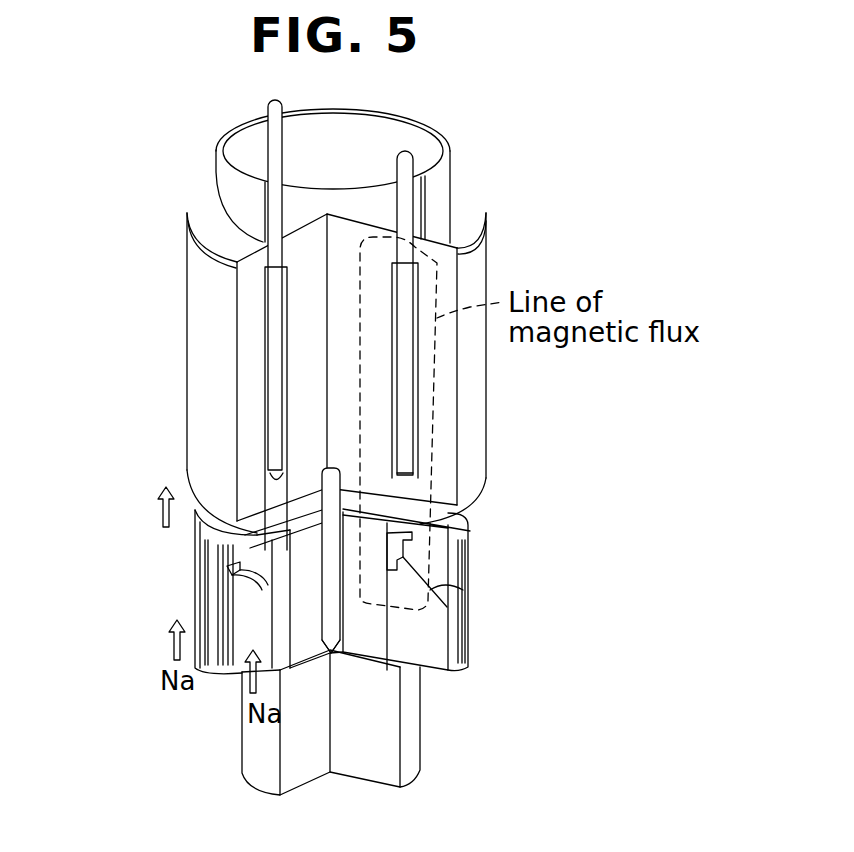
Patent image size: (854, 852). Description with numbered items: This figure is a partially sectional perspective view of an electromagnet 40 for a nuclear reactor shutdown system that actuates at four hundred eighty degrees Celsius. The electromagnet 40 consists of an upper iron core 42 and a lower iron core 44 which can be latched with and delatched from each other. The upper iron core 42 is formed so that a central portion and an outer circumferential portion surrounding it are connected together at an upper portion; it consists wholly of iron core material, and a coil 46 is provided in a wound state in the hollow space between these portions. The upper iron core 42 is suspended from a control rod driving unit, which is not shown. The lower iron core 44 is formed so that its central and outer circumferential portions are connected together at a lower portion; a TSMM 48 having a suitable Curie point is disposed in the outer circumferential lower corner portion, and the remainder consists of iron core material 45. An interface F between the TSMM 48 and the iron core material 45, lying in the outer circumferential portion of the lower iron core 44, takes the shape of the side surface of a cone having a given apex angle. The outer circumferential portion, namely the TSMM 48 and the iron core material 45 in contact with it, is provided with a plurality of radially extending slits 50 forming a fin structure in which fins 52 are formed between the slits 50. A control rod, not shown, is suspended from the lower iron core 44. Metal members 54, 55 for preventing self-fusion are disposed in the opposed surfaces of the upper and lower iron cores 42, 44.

The electromagnet 40 is at (112, 442).
The upper iron core 42 is at (180, 452).
The lower iron core 44 is at (228, 621).
The iron core material 45 is at (404, 548).
The coil 46 is at (407, 450).
The TSMM 48 is at (430, 662).
The slits 50 is at (237, 618).
The fins 52 is at (232, 672).
The metal member 54 is at (458, 497).
The metal member 55 is at (420, 575).
The interface F is at (460, 595).